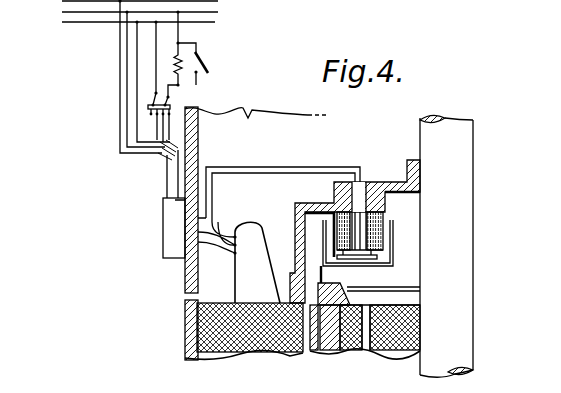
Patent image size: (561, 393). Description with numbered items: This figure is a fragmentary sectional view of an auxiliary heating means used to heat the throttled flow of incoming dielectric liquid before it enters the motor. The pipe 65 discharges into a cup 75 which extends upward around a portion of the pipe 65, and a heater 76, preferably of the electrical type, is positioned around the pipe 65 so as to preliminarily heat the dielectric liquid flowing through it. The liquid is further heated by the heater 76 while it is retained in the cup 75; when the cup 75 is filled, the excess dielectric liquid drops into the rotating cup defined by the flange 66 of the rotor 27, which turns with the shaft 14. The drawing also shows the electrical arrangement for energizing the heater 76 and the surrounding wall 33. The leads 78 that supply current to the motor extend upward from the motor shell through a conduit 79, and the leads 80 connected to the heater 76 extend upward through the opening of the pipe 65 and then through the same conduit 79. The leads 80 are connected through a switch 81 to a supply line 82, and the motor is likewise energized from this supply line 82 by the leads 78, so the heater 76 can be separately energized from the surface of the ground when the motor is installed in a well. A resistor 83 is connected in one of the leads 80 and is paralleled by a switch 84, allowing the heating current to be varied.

The shaft 14 is at (458, 146).
The rotor 27 is at (355, 338).
The frame wall 33 is at (283, 1).
The pipe 65 is at (327, 228).
The flange 66 is at (328, 281).
The cup 75 is at (394, 238).
The heater 76 is at (380, 226).
The leads 78 is at (128, 114).
The conduit 79 is at (166, 179).
The leads 80 is at (298, 167).
The switch 81 is at (170, 105).
The supply line 82 is at (94, 21).
The resistor 83 is at (182, 62).
The switch 84 is at (209, 64).